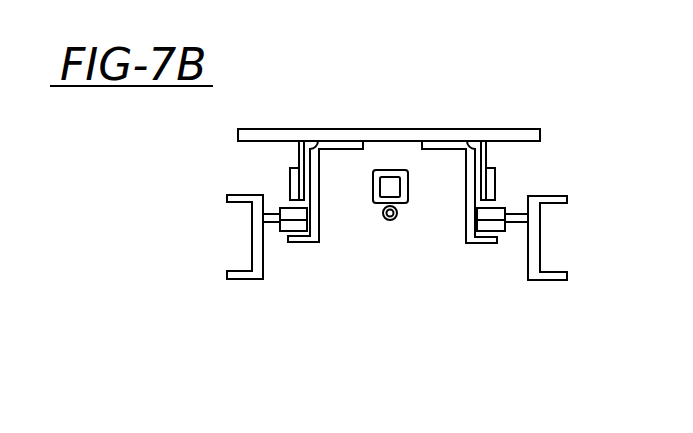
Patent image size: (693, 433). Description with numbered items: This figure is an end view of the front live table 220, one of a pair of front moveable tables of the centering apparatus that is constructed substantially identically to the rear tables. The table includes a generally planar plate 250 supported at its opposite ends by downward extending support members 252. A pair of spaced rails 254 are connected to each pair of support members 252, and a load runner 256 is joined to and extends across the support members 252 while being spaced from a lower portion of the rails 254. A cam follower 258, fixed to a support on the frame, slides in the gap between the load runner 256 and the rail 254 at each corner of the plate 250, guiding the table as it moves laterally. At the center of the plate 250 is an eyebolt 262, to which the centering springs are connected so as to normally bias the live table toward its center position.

The front live table 220 is at (385, 100).
The plate 250 is at (460, 129).
The support member 252 is at (300, 146).
The rail 254 is at (304, 231).
The load runner 256 is at (292, 178).
The cam follower 258 is at (277, 233).
The eyebolt 262 is at (390, 221).